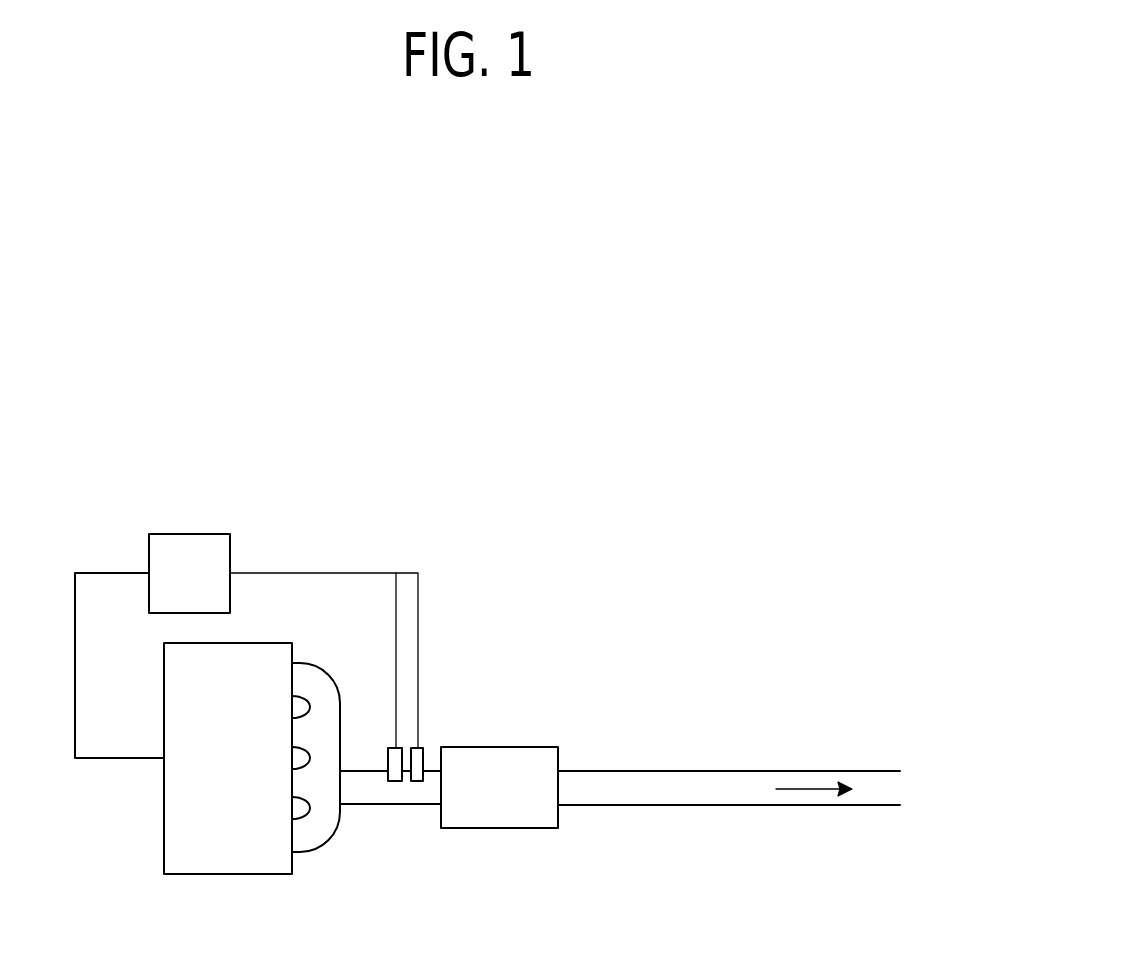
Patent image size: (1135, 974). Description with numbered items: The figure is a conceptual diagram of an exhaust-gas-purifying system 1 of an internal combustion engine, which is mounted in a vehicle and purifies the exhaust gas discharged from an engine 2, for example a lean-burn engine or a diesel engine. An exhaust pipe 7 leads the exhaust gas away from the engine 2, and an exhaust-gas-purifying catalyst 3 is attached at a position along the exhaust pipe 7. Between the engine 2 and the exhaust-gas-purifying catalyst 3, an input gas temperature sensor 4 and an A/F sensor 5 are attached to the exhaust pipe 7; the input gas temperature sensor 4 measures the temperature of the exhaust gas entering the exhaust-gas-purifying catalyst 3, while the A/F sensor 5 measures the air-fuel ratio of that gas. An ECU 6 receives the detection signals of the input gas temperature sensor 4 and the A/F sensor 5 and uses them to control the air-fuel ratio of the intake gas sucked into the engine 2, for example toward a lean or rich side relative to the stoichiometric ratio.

The exhaust-gas-purifying system 1 is at (466, 460).
The engine 2 is at (234, 858).
The exhaust-gas-purifying catalyst 3 is at (500, 806).
The input gas temperature sensor 4 is at (390, 757).
The A/F sensor 5 is at (420, 757).
The ECU 6 is at (188, 553).
The exhaust pipe 7 is at (642, 792).